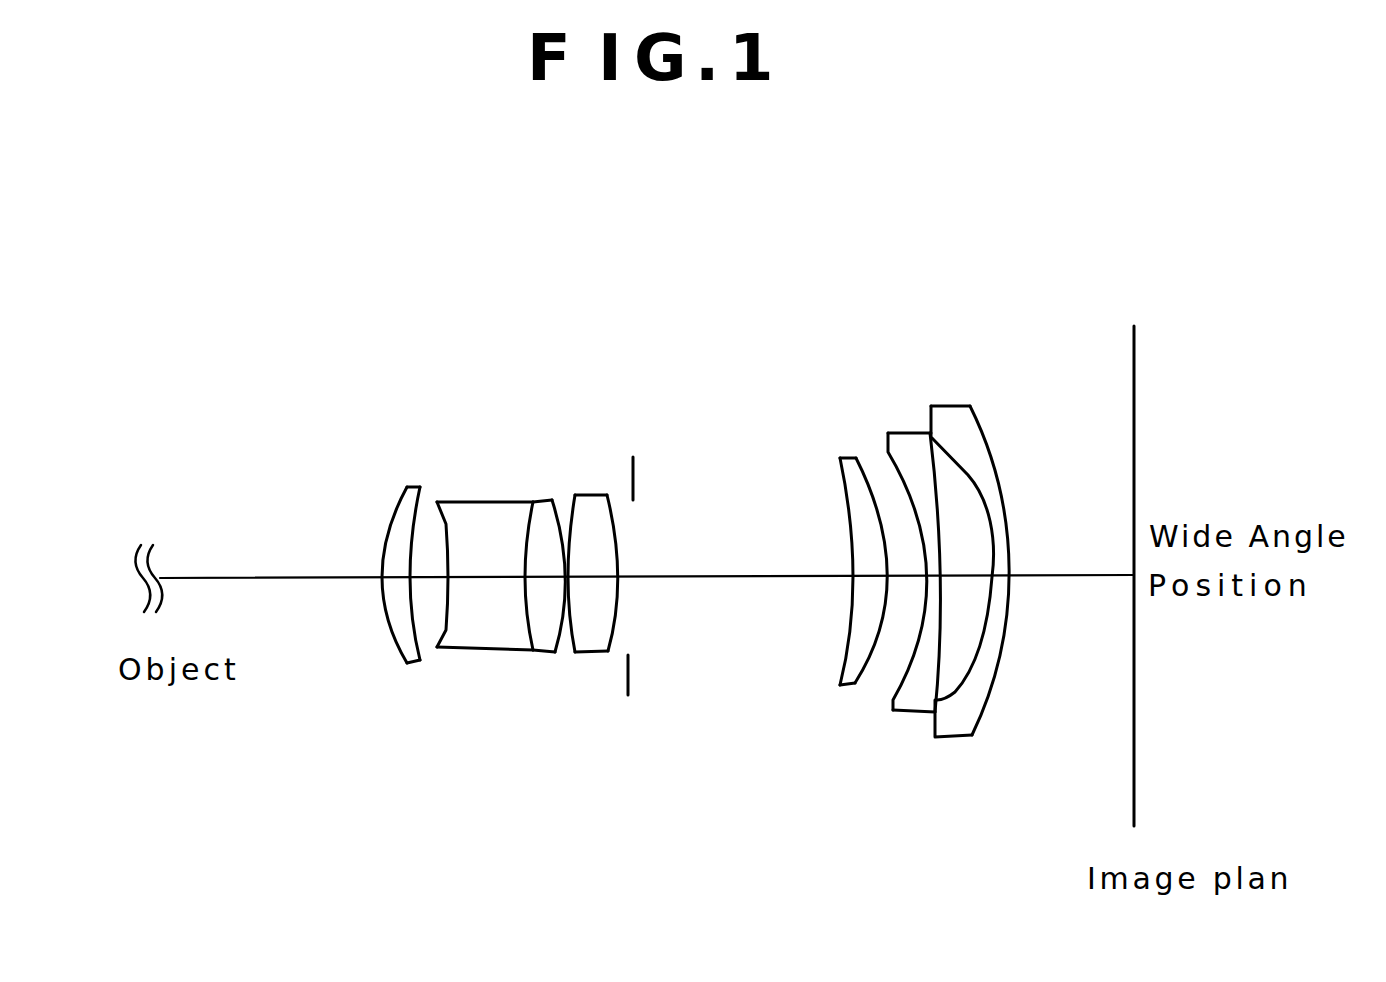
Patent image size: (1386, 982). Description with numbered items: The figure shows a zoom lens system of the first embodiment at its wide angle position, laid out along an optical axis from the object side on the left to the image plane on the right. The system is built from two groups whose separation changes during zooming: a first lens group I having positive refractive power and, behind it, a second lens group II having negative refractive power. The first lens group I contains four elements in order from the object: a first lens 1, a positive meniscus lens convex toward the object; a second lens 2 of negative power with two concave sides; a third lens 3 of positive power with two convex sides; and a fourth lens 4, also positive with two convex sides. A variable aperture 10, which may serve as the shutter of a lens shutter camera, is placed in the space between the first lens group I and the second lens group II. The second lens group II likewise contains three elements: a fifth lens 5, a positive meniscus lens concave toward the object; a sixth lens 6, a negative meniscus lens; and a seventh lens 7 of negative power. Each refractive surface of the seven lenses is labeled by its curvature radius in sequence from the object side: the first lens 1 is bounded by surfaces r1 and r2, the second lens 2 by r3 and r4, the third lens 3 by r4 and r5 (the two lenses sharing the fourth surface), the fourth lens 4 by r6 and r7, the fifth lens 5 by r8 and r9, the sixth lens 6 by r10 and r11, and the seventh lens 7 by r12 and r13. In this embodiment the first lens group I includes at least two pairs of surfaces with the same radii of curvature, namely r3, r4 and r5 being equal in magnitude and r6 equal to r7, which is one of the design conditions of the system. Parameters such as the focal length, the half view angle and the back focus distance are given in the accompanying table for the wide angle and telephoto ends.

The first lens group I is at (390, 243).
The second lens group II is at (833, 243).
The first lens 1 is at (368, 295).
The second lens 2 is at (507, 295).
The third lens 3 is at (553, 295).
The fourth lens 4 is at (648, 295).
The fifth lens 5 is at (857, 295).
The sixth lens 6 is at (883, 295).
The seventh lens 7 is at (962, 295).
The variable aperture 10 is at (627, 690).
The refractive surface curvature radius r1 is at (390, 513).
The refractive surface curvature radius r2 is at (420, 512).
The refractive surface curvature radius r3 is at (452, 510).
The refractive surface curvature radius r4 is at (530, 503).
The refractive surface curvature radius r5 is at (560, 502).
The refractive surface curvature radius r6 is at (588, 497).
The refractive surface curvature radius r7 is at (612, 512).
The refractive surface curvature radius r8 is at (842, 474).
The refractive surface curvature radius r9 is at (868, 470).
The refractive surface curvature radius r10 is at (888, 465).
The refractive surface curvature radius r11 is at (933, 470).
The refractive surface curvature radius r12 is at (962, 406).
The refractive surface curvature radius r13 is at (996, 476).